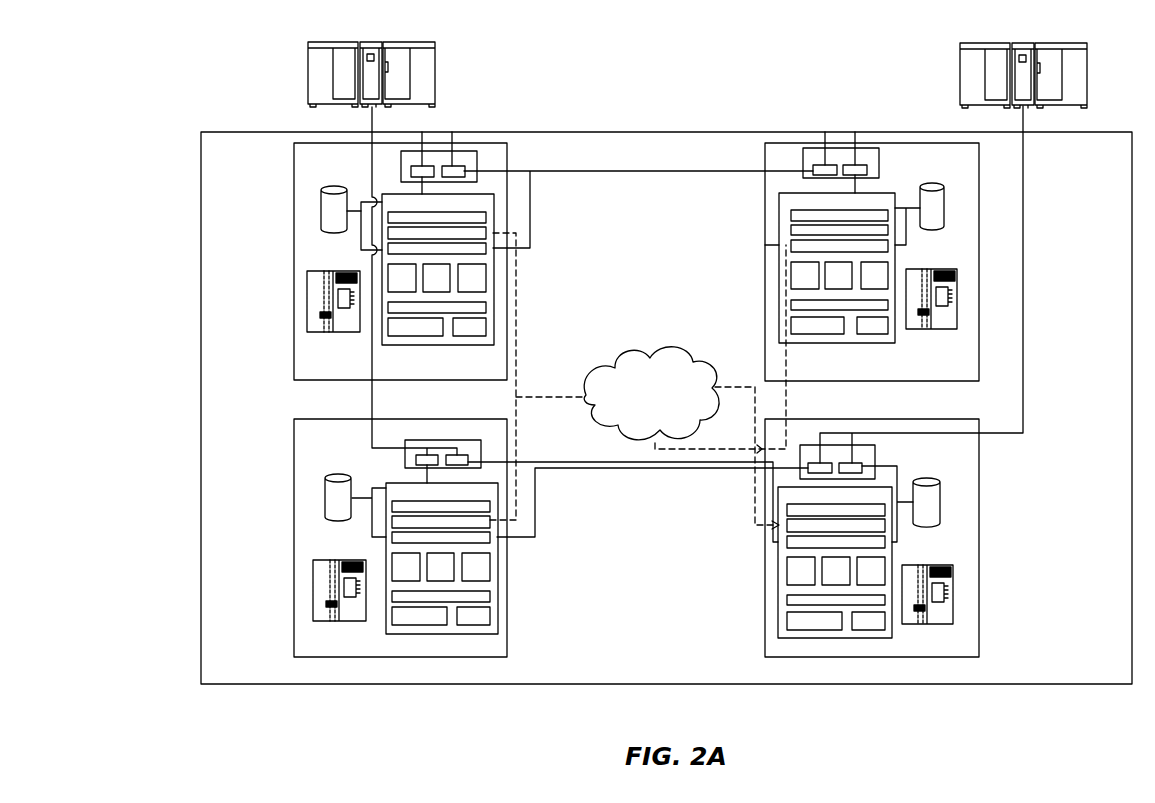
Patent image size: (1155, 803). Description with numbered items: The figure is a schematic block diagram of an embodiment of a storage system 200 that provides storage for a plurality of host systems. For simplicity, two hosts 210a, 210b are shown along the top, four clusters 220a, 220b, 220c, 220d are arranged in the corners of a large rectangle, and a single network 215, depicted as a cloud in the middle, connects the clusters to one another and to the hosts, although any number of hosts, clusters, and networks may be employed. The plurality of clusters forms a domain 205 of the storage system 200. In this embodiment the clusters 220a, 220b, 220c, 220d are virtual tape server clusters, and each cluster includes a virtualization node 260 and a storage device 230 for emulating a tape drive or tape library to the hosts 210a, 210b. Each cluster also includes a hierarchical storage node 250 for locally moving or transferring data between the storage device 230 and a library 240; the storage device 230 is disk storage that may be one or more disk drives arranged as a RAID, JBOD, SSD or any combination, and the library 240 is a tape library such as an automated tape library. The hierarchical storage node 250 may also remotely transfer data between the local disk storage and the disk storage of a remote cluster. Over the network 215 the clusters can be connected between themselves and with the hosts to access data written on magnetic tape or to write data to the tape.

The storage system 200 is at (267, 57).
The domain 205 is at (665, 320).
The host 210a is at (435, 58).
The host 210b is at (960, 73).
The network 215 is at (674, 420).
The cluster 220a is at (413, 380).
The cluster 220b is at (507, 598).
The cluster 220c is at (935, 381).
The cluster 220d is at (979, 598).
The storage device 230 is at (320, 212).
The library 240 is at (307, 300).
The hierarchical storage node 250 is at (413, 345).
The virtualization node 260 is at (478, 166).